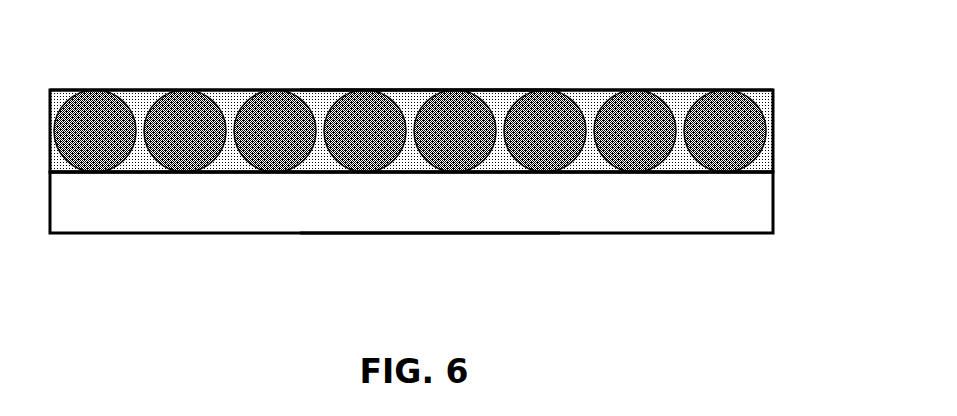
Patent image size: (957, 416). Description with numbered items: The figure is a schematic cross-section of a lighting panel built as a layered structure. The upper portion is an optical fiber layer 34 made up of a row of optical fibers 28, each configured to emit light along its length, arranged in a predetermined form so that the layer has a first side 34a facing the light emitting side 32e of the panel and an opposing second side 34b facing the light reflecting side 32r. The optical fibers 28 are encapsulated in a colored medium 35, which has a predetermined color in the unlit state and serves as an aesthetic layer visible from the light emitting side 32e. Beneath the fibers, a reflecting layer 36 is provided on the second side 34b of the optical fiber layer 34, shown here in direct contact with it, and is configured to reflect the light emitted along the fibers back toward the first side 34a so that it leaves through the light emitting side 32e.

The optical fibers 28 is at (731, 125).
The light emitting side 32e is at (428, 72).
The light reflecting side 32r is at (425, 243).
The optical fiber layer 34 is at (777, 125).
The first side 34a is at (137, 88).
The second side 34b is at (133, 174).
The colored medium 35 is at (680, 100).
The reflecting layer 36 is at (776, 200).